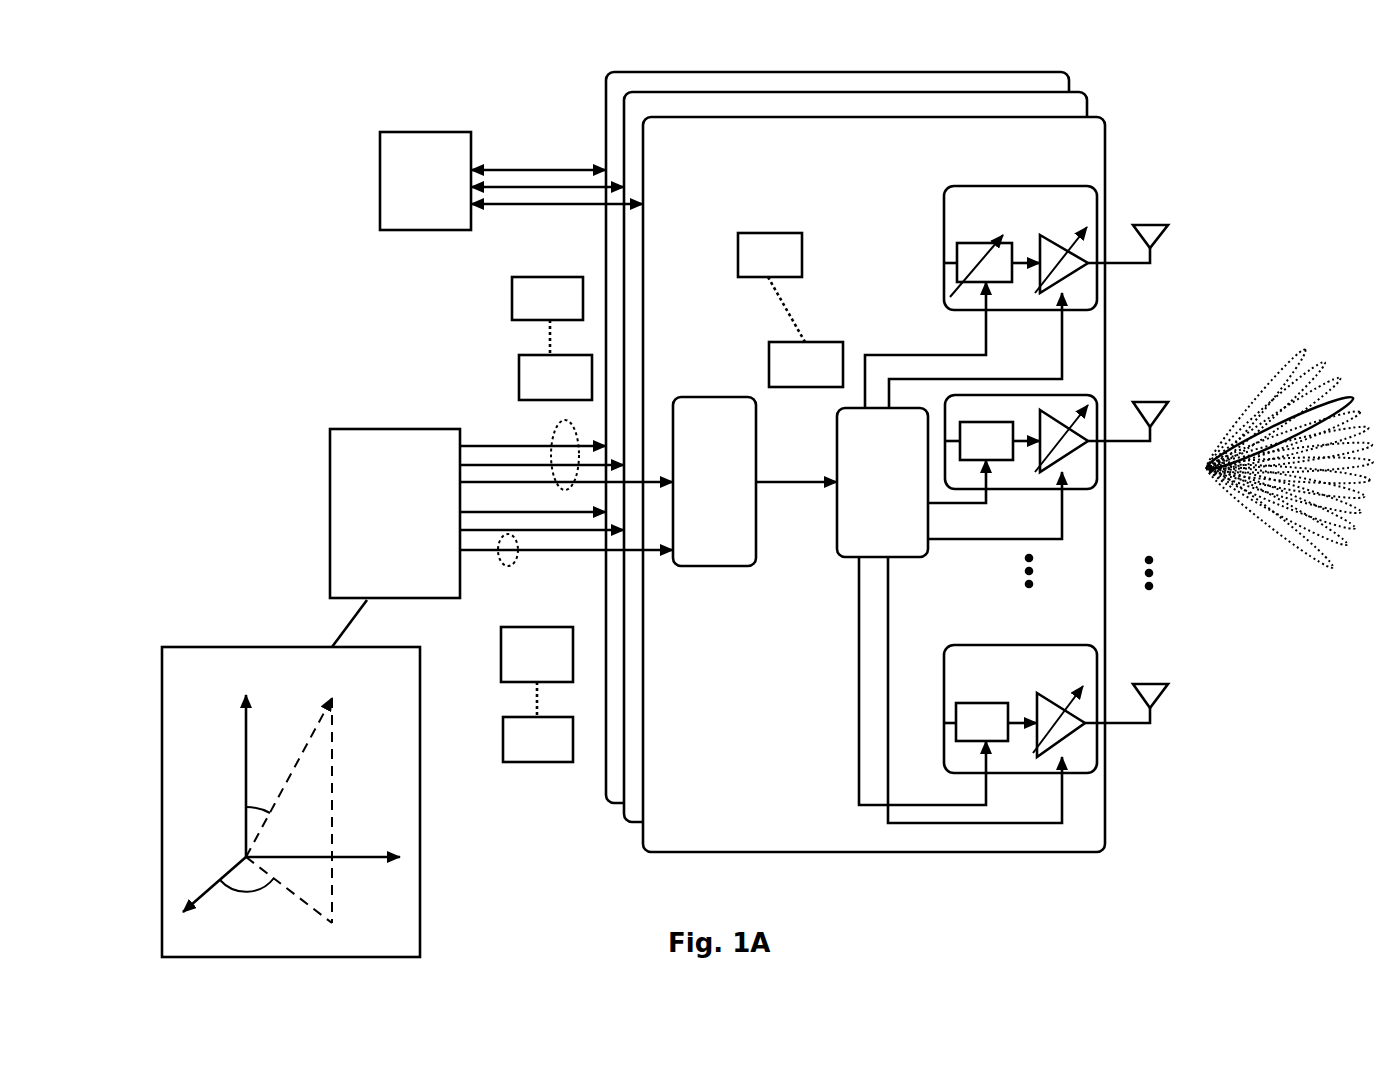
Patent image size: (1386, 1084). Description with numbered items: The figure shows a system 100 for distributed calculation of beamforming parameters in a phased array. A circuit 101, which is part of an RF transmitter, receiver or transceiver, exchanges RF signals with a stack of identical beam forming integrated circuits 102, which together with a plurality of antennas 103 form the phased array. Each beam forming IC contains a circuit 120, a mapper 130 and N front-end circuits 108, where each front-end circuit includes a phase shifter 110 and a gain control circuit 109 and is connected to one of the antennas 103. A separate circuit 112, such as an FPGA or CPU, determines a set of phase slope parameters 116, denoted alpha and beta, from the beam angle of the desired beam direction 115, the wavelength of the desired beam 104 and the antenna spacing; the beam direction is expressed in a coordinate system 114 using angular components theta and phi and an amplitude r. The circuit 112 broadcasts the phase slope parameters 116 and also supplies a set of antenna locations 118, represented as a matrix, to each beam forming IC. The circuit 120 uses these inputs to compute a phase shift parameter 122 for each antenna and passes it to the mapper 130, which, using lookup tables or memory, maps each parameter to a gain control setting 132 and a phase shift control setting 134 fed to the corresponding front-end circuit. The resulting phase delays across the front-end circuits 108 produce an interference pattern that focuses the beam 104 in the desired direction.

The system 100 is at (893, 469).
The circuit 101 is at (511, 181).
The beam forming integrated circuits 102 is at (1122, 120).
The antennas 103 is at (1178, 208).
The beam 104 is at (1277, 433).
The front-end circuits 108 is at (1097, 167).
The gain control circuit 109 is at (1054, 243).
The phase shifter 110 is at (978, 243).
The circuit 112 is at (501, 513).
The coordinate system 114 is at (291, 778).
The desired beam direction 115 is at (303, 753).
The set of phase slope parameters 116 is at (566, 428).
The set of antenna locations 118 is at (508, 566).
The circuit 120 is at (755, 481).
The phase shift parameter 122 is at (785, 482).
The mapper 130 is at (882, 482).
The gain control setting 132 is at (930, 805).
The phase shift control setting 134 is at (1036, 823).